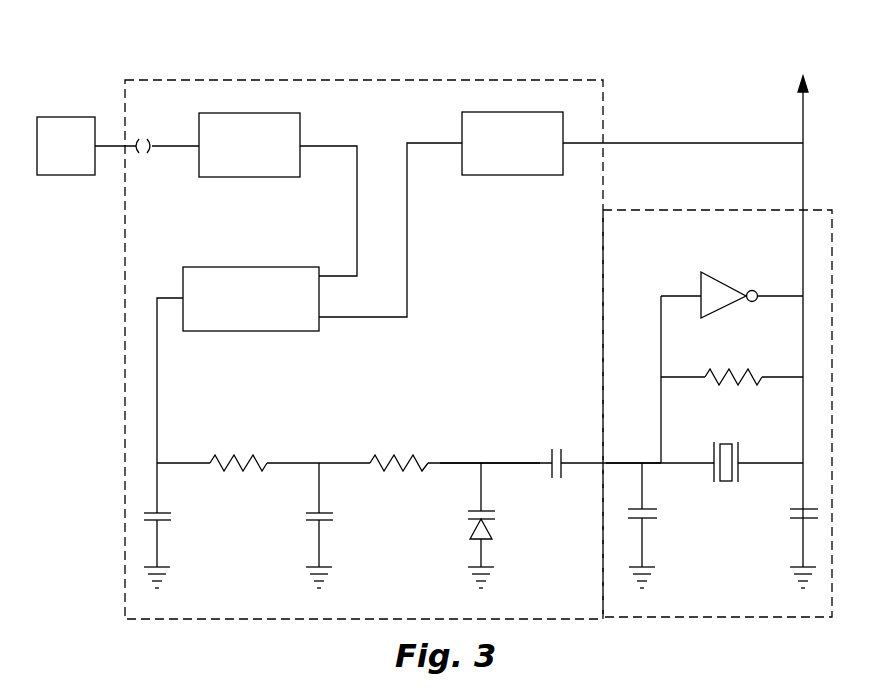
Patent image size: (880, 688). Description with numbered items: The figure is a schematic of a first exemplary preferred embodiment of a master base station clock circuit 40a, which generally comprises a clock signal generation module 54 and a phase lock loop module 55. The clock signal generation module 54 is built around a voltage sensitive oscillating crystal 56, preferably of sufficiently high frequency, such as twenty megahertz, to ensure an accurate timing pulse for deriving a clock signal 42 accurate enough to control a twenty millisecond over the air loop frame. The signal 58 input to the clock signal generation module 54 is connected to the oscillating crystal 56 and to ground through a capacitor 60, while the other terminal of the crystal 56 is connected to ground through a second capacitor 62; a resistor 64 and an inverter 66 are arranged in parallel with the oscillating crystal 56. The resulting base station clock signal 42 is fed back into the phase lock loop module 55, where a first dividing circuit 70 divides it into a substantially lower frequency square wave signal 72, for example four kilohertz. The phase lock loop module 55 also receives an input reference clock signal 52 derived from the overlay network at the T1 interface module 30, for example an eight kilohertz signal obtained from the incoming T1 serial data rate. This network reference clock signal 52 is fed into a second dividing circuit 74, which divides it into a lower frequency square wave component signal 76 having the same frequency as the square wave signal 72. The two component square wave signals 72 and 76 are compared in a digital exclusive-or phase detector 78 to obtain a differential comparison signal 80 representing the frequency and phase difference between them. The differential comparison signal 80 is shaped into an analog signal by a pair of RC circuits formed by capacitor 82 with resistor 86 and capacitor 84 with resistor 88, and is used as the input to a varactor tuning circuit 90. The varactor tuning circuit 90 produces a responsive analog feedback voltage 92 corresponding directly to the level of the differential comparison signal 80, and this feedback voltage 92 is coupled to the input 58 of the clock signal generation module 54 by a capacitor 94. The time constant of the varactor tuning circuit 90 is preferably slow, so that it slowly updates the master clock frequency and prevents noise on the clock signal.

The T1 interface module 30 is at (57, 117).
The master base station clock circuit 40a is at (688, 55).
The clock signal 42 is at (803, 118).
The input reference clock signal 52 is at (177, 145).
The clock signal generation module 54 is at (817, 208).
The phase lock loop module 55 is at (487, 79).
The voltage sensitive oscillating crystal 56 is at (729, 438).
The input signal 58 is at (628, 461).
The capacitor 60 is at (657, 513).
The second capacitor 62 is at (791, 511).
The resistor 64 is at (737, 370).
The inverter 66 is at (727, 281).
The first dividing circuit 70 is at (488, 176).
The square wave signal 72 is at (407, 277).
The second dividing circuit 74 is at (300, 127).
The square wave component signal 76 is at (357, 158).
The phase detector 78 is at (245, 267).
The differential comparison signal 80 is at (157, 387).
The RC circuit capacitor 82 is at (172, 516).
The RC circuit capacitor 84 is at (333, 517).
The RC circuit resistor 86 is at (246, 457).
The RC circuit resistor 88 is at (400, 456).
The varactor tuning circuit 90 is at (466, 530).
The analog feedback voltage 92 is at (506, 462).
The capacitor 94 is at (555, 482).